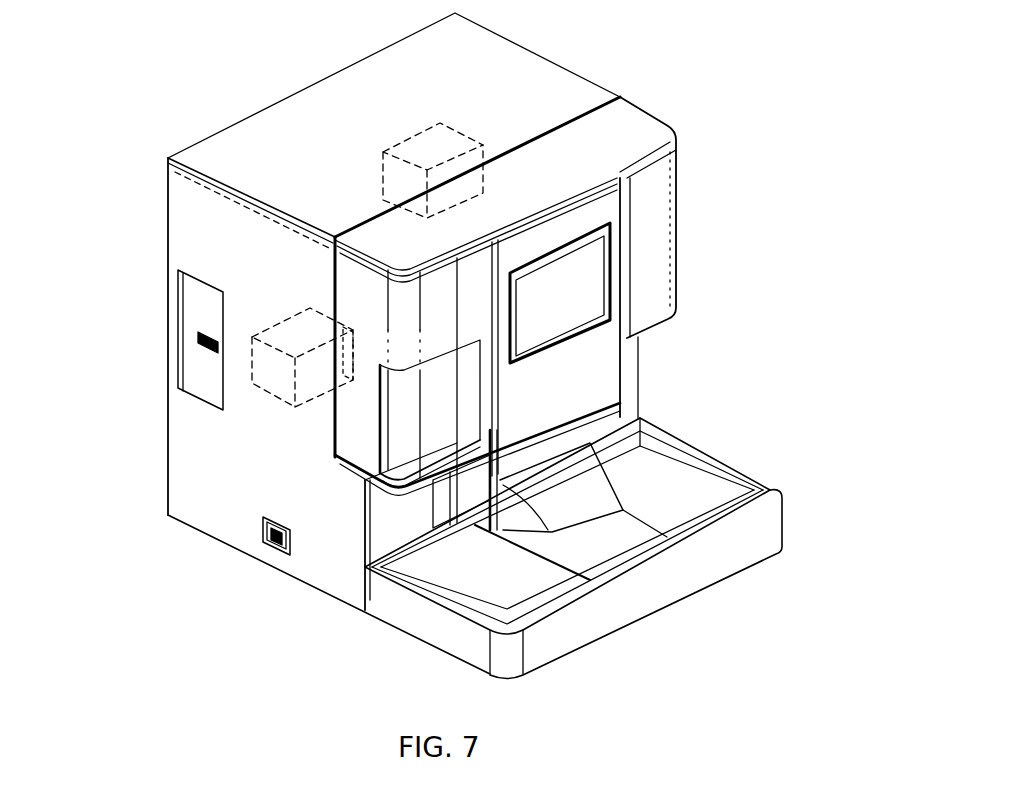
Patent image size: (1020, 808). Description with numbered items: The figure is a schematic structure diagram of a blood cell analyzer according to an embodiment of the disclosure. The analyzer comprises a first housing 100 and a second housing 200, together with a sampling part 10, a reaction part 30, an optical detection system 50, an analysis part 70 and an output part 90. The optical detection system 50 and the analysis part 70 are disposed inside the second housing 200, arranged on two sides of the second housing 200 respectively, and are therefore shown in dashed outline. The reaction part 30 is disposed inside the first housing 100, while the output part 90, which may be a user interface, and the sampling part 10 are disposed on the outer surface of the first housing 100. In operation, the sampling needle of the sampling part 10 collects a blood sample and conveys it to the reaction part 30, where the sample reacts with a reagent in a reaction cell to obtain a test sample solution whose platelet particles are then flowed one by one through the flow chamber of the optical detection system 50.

The sampling part 10 is at (368, 588).
The reaction part 30 is at (475, 290).
The optical detection system 50 is at (440, 145).
The analysis part 70 is at (267, 362).
The output part 90 is at (580, 270).
The first housing 100 is at (633, 123).
The second housing 200 is at (195, 212).